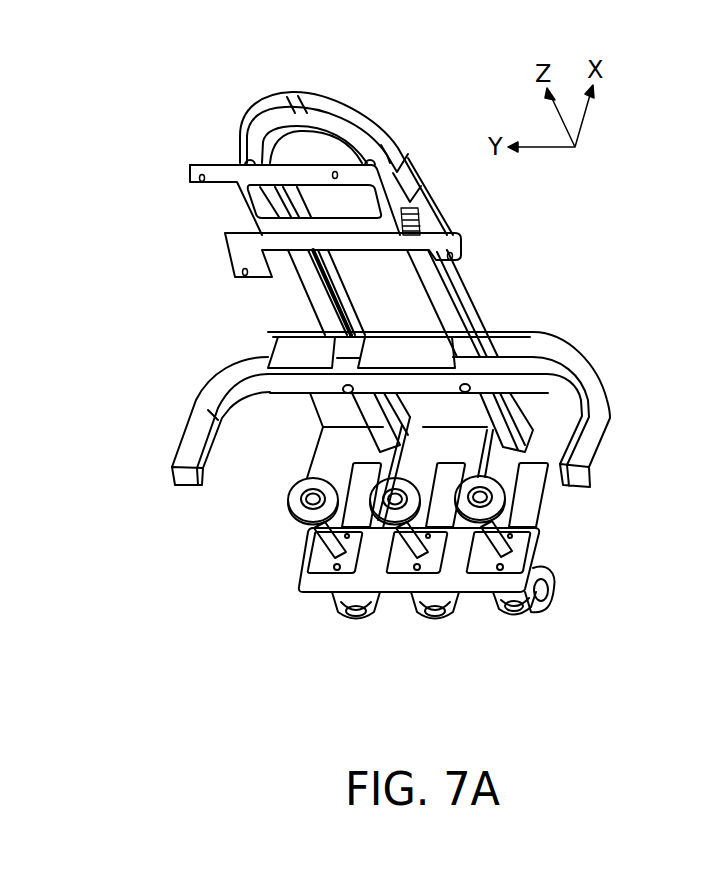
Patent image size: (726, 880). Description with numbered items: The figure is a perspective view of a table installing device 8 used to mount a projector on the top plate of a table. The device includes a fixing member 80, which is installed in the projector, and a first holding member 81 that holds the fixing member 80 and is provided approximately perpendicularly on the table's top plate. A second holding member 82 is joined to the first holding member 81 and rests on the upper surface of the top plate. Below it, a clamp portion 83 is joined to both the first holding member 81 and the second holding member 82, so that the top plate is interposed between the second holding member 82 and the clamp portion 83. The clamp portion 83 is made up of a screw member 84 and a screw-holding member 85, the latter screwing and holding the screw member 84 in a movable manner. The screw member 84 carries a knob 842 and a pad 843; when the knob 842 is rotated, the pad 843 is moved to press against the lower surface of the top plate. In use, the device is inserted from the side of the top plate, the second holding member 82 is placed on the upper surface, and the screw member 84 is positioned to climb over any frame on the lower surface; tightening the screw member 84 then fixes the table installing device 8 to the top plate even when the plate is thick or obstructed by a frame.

The table installing device 8 is at (614, 267).
The fixing member 80 is at (237, 253).
The first holding member 81 is at (307, 297).
The second holding member 82 is at (228, 378).
The clamp portion 83 is at (267, 567).
The screw member 84 is at (588, 582).
The screw-holding member 85 is at (555, 451).
The knob 842 is at (547, 608).
The pad 843 is at (503, 489).